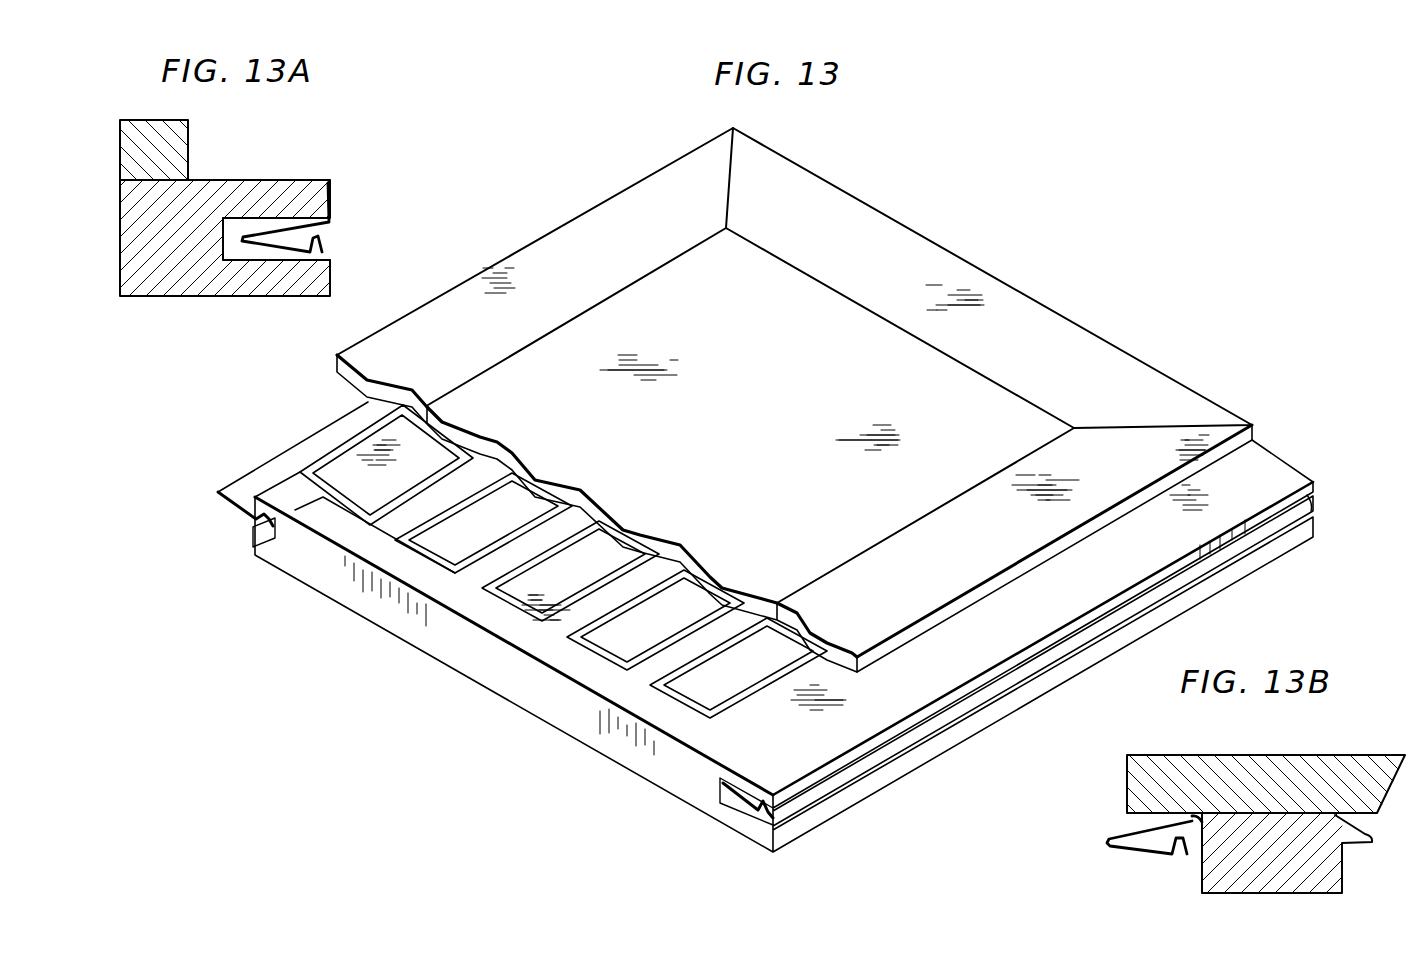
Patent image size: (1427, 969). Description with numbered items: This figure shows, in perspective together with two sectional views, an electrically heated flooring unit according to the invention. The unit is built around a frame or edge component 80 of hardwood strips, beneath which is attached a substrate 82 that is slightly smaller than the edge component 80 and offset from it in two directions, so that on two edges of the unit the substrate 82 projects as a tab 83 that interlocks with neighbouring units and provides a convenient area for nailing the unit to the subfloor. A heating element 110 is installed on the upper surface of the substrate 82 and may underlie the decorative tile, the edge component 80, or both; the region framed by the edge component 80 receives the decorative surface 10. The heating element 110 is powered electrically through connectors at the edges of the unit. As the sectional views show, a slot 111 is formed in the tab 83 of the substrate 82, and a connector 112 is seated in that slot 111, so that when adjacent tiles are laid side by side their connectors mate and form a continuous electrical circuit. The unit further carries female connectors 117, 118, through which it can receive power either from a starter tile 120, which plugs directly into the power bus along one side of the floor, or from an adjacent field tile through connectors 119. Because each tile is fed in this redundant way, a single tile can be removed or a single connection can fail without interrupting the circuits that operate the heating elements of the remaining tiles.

In FIG. 13, the display panel 10 is at (798, 302).
In FIG. 13, the frame 80 is at (1100, 360).
In FIG. 13A, the frame 80 is at (182, 141).
In FIG. 13B, the frame 80 is at (1288, 775).
In FIG. 13, the substrate 82 is at (732, 753).
In FIG. 13B, the substrate 82 is at (1330, 865).
In FIG. 13A, the tab 83 is at (298, 188).
In FIG. 13, the heating element 110 is at (568, 597).
In FIG. 13A, the slot 111 is at (322, 255).
In FIG. 13A, the connector 112 is at (327, 238).
In FIG. 13, the female connector 117 is at (742, 813).
In FIG. 13, the female connector 118 is at (253, 547).
In FIG. 13, the connectors 119 is at (1318, 500).
In FIG. 13, the starter tile 120 is at (601, 226).